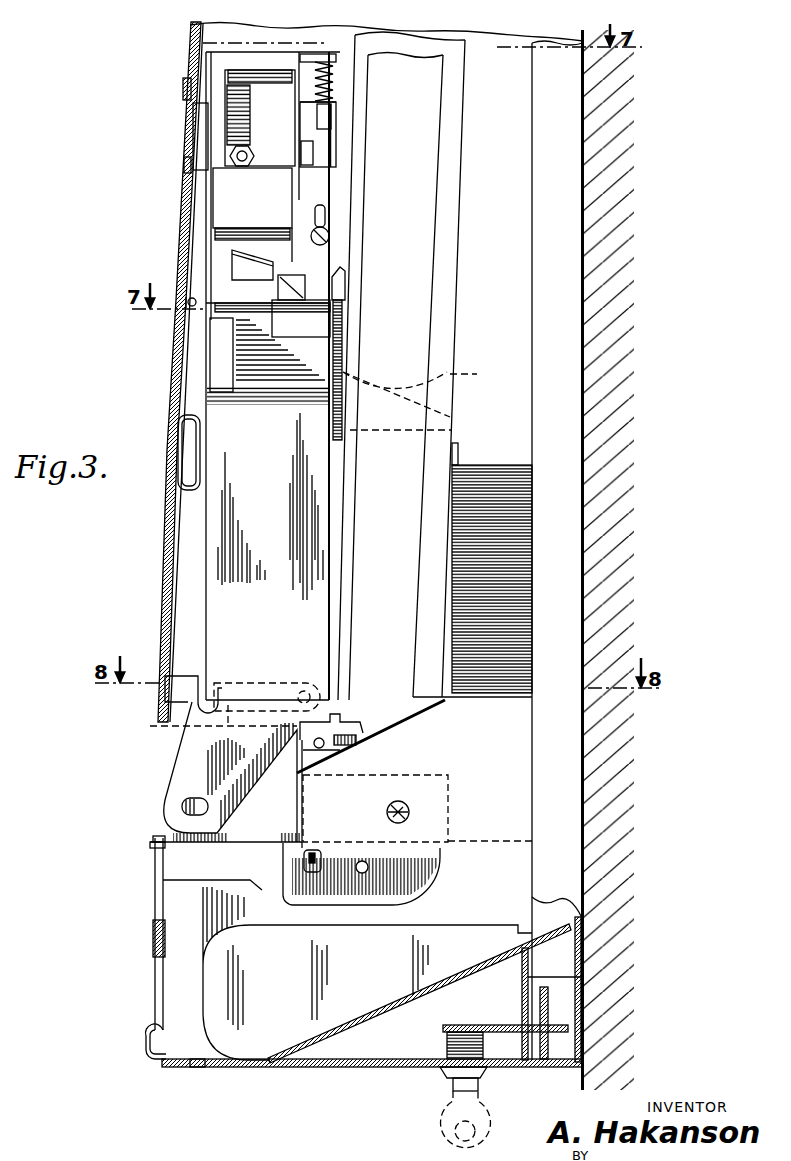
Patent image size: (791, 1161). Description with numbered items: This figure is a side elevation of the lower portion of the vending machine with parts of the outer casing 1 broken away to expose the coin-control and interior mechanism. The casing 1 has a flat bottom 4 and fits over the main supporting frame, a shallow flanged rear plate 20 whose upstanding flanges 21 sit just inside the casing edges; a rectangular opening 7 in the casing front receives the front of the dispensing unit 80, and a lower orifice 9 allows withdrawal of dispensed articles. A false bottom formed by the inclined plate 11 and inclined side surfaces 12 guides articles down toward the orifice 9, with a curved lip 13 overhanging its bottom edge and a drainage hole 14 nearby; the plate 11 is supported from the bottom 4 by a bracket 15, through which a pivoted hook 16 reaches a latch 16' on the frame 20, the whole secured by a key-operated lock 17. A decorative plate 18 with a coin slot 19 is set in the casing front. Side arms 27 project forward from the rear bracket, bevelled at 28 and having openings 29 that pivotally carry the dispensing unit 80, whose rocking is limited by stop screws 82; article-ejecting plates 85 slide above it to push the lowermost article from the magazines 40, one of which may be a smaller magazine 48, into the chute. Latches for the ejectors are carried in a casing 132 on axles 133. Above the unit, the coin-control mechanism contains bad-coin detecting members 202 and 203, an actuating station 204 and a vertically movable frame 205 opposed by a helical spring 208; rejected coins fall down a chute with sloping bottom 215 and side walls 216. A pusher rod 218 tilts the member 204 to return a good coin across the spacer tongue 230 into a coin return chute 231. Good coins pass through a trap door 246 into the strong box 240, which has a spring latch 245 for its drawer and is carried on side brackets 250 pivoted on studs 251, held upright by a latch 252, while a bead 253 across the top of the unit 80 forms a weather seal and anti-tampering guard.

The outer casing 1 is at (166, 600).
The bottom 4 is at (352, 1068).
The rectangular opening 7 is at (152, 843).
The rectangular orifice 9 is at (154, 977).
The inclined surface 11 is at (438, 984).
The inclined side surfaces 12 is at (428, 937).
The curved lip 13 is at (150, 1036).
The hole 14 is at (202, 1068).
The bracket 15 is at (584, 977).
The pivoted hook 16 is at (562, 1037).
The latch 16' is at (615, 1023).
The key-operated lock 17 is at (455, 1038).
The decorative construction plate 18 is at (180, 233).
The coin slot 19 is at (185, 127).
The rear frame plate 20 is at (584, 916).
The upstanding flanges 21 is at (565, 505).
The side arms 27 is at (480, 748).
The bevel 28 is at (406, 723).
The openings 29 is at (412, 809).
The article magazines 40 is at (458, 240).
The smaller magazine 48 is at (430, 287).
The dispensing mechanism casing 80 is at (176, 768).
The stop screws 82 is at (303, 862).
The article-ejecting plates 85 is at (324, 737).
The casing 132 is at (412, 891).
The axles 133 is at (362, 874).
The bad-coin detecting member 202 is at (245, 201).
The bad-coin arresting member 203 is at (232, 268).
The actuating station 204 is at (287, 302).
The vertically movable frame 205 is at (333, 157).
The helical spring 208 is at (334, 72).
The sloping bottom 215 is at (256, 388).
The side walls 216 is at (212, 357).
The pusher rod 218 is at (190, 304).
The spacer tongue 230 is at (428, 397).
The coin return chute 231 is at (487, 482).
The strong box 240 is at (204, 568).
The spring latch 245 is at (186, 495).
The trap door 246 is at (334, 306).
The side brackets 250 is at (180, 778).
The studs 251 is at (183, 807).
The latch 252 is at (238, 686).
The bead 253 is at (174, 722).